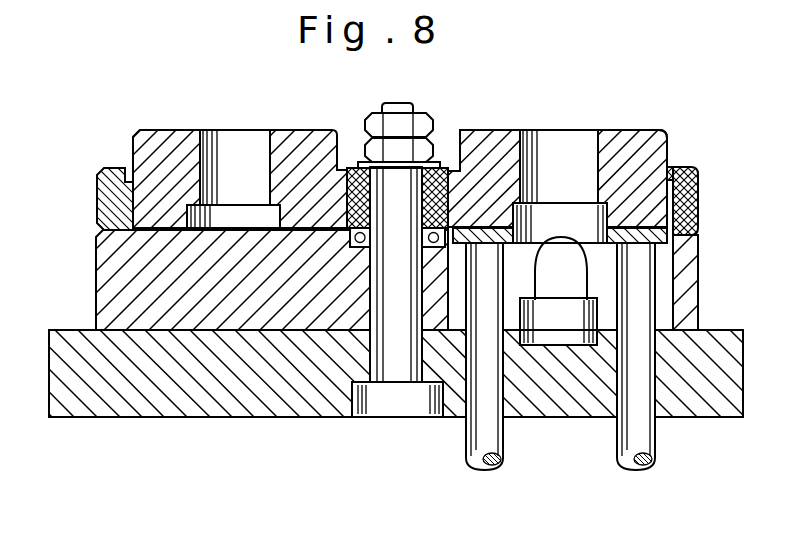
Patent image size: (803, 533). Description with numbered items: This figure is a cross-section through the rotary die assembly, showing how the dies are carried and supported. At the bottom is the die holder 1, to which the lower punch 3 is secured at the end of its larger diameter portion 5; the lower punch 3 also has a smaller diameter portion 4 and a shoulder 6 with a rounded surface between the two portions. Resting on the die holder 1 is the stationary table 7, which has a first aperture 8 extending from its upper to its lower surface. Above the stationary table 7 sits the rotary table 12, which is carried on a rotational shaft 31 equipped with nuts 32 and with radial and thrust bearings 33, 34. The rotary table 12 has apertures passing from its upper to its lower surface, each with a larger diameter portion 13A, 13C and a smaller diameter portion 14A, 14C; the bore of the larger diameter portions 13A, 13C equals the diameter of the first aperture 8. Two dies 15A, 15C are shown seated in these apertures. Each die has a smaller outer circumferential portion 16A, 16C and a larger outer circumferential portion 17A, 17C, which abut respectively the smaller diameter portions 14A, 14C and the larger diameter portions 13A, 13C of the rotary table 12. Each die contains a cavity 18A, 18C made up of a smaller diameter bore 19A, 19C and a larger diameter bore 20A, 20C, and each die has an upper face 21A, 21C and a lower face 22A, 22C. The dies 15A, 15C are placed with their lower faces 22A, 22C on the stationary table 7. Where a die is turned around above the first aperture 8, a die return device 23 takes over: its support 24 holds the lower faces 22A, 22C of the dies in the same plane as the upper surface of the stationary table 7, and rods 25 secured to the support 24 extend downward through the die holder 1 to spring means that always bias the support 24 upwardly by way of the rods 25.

The die holder 1 is at (706, 340).
The lower punch 3 is at (530, 330).
The smaller diameter portion 4 is at (565, 330).
The larger diameter portion 5 is at (553, 255).
The shoulder 6 is at (598, 285).
The stationary table 7 is at (672, 288).
The first aperture 8 is at (692, 250).
The rotary table 12 is at (700, 192).
The larger diameter portion 13A is at (105, 193).
The larger diameter portion 13C is at (520, 172).
The smaller diameter portion 14A is at (140, 170).
The smaller diameter portion 14C is at (470, 176).
The die 15A is at (140, 168).
The die 15C is at (657, 145).
The smaller outer circumferential portion 16A is at (130, 150).
The smaller outer circumferential portion 16C is at (640, 185).
The larger outer circumferential portion 17A is at (128, 178).
The larger outer circumferential portion 17C is at (700, 176).
The cavity 18A is at (240, 167).
The cavity 18C is at (590, 140).
The smaller diameter bore 19A is at (262, 163).
The smaller diameter bore 19C is at (567, 173).
The larger diameter bore 20A is at (213, 213).
The larger diameter bore 20C is at (517, 253).
The upper face 21A is at (195, 168).
The upper face 21C is at (632, 130).
The lower face 22A is at (147, 233).
The lower face 22C is at (672, 172).
The die return device 23 is at (672, 462).
The support 24 is at (703, 212).
The rods 25 is at (657, 433).
The rotational shaft 31 is at (395, 280).
The nuts 32 is at (430, 118).
The radial bearing 33 is at (348, 205).
The thrust bearing 34 is at (443, 178).